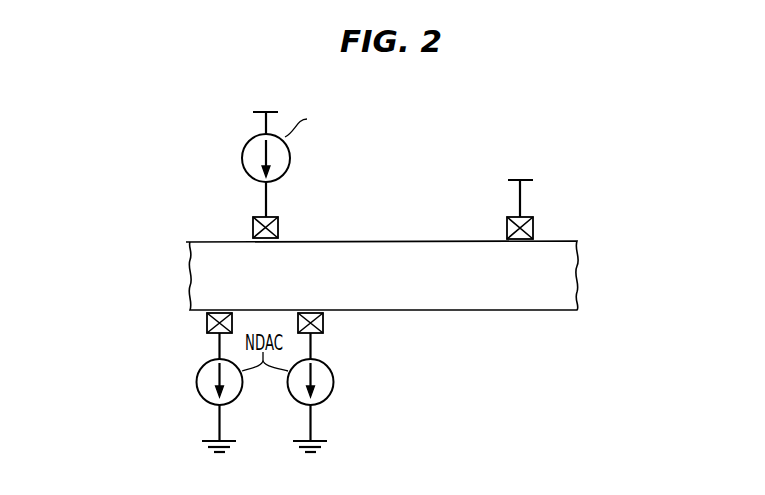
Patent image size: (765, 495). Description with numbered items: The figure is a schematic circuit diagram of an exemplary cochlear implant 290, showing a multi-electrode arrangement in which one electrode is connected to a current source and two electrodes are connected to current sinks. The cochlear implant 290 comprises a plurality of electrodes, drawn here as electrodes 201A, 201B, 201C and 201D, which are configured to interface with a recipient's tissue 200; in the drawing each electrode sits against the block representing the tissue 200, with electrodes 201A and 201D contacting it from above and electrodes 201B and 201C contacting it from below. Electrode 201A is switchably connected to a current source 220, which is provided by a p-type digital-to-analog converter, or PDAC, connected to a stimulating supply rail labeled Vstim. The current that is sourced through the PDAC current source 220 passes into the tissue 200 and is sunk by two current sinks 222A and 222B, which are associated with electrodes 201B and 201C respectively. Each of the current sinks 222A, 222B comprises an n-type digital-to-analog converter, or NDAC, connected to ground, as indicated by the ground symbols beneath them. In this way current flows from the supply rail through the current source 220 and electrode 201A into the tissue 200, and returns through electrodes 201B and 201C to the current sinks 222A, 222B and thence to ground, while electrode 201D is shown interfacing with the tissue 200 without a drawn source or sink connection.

The tissue 200 is at (577, 270).
The electrode 201A is at (280, 227).
The electrode 201B is at (207, 325).
The electrode 201C is at (325, 320).
The electrode 201D is at (533, 223).
The current source 220 is at (170, 100).
The current sink 222A is at (157, 407).
The current sink 222B is at (380, 407).
The cochlear implant 290 is at (123, 228).